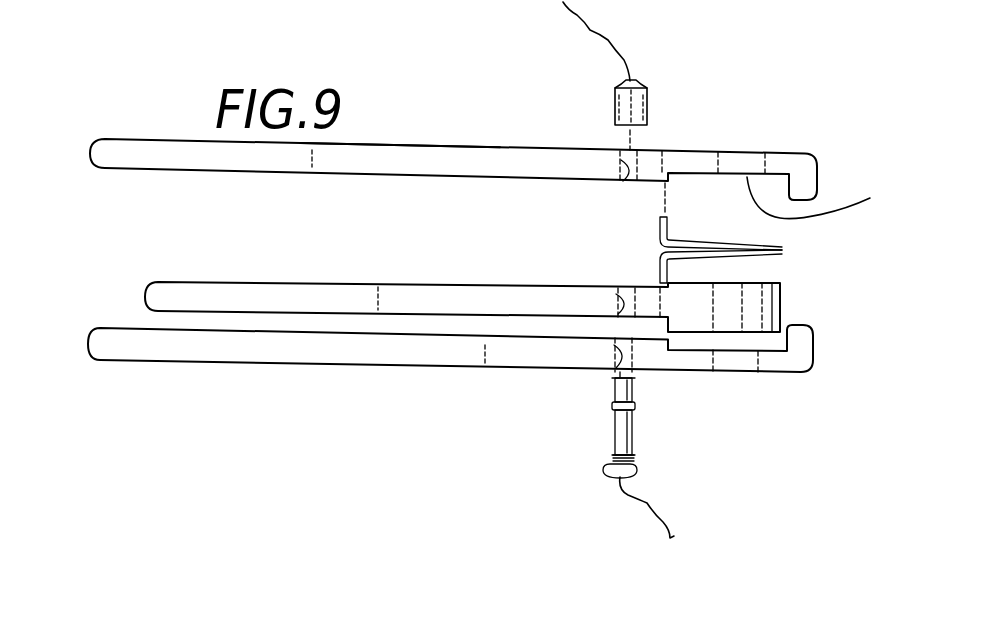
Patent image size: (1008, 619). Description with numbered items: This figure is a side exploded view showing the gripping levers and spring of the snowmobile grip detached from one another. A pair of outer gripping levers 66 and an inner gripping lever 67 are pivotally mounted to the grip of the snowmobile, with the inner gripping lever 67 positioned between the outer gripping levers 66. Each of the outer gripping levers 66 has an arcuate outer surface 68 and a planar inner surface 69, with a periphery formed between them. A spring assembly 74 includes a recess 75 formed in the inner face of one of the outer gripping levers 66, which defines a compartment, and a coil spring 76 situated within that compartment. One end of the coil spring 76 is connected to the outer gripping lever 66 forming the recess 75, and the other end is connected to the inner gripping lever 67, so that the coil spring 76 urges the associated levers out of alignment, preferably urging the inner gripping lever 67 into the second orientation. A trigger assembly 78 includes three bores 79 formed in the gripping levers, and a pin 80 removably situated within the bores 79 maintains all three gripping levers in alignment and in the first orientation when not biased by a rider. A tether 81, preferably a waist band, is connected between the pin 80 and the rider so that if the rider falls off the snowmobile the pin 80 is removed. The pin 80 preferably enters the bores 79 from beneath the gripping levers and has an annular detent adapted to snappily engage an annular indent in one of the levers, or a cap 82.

The outer gripping levers 66 is at (142, 143).
The inner gripping lever 67 is at (143, 298).
The arcuate outer surface 68 is at (385, 142).
The planar inner surface 69 is at (293, 175).
The spring assembly 74 is at (783, 249).
The recess 75 is at (827, 198).
The coil spring 76 is at (783, 252).
The trigger assembly 78 is at (672, 392).
The bores 79 is at (632, 178).
The pin 80 is at (612, 426).
The tether 81 is at (647, 503).
The cap 82 is at (648, 105).